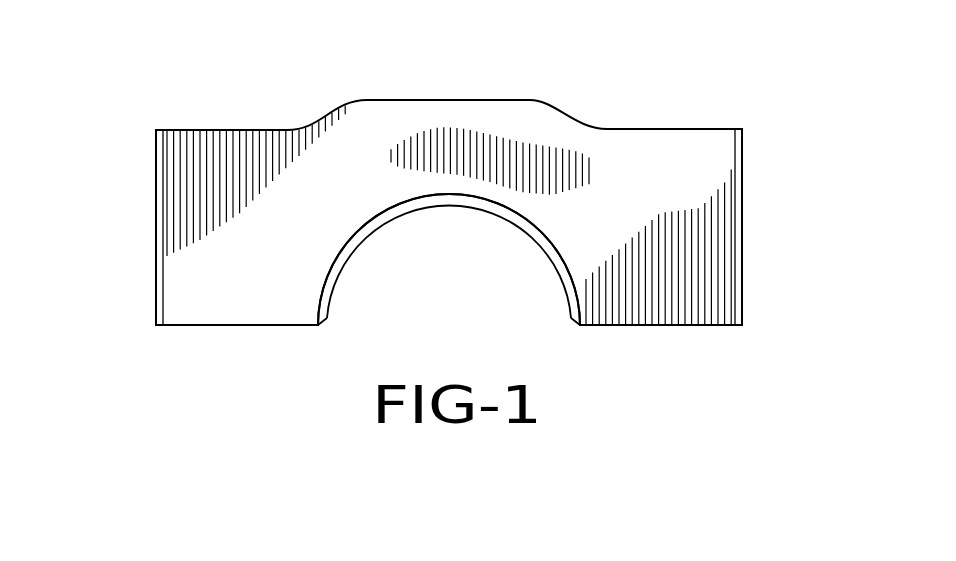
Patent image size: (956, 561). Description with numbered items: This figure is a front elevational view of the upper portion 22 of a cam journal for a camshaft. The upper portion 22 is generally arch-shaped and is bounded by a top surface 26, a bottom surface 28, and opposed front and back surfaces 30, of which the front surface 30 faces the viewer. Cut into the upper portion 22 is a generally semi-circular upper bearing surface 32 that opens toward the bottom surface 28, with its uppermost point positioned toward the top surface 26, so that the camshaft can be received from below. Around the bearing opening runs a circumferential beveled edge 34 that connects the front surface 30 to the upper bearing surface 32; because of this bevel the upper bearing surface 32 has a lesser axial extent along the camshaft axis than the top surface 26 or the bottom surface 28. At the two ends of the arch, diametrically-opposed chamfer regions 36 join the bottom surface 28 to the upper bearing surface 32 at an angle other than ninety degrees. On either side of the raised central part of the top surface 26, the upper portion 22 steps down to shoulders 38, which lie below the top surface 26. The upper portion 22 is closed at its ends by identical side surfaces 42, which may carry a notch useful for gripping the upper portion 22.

The upper portion 22 is at (198, 183).
The top surface 26 is at (445, 100).
The bottom surface 28 is at (692, 325).
The front surface 30 is at (243, 298).
The upper bearing surface 32 is at (513, 227).
The circumferential beveled edge 34 is at (378, 220).
The chamfer regions 36 is at (325, 319).
The shoulders 38 is at (212, 130).
The side surfaces 42 is at (155, 285).